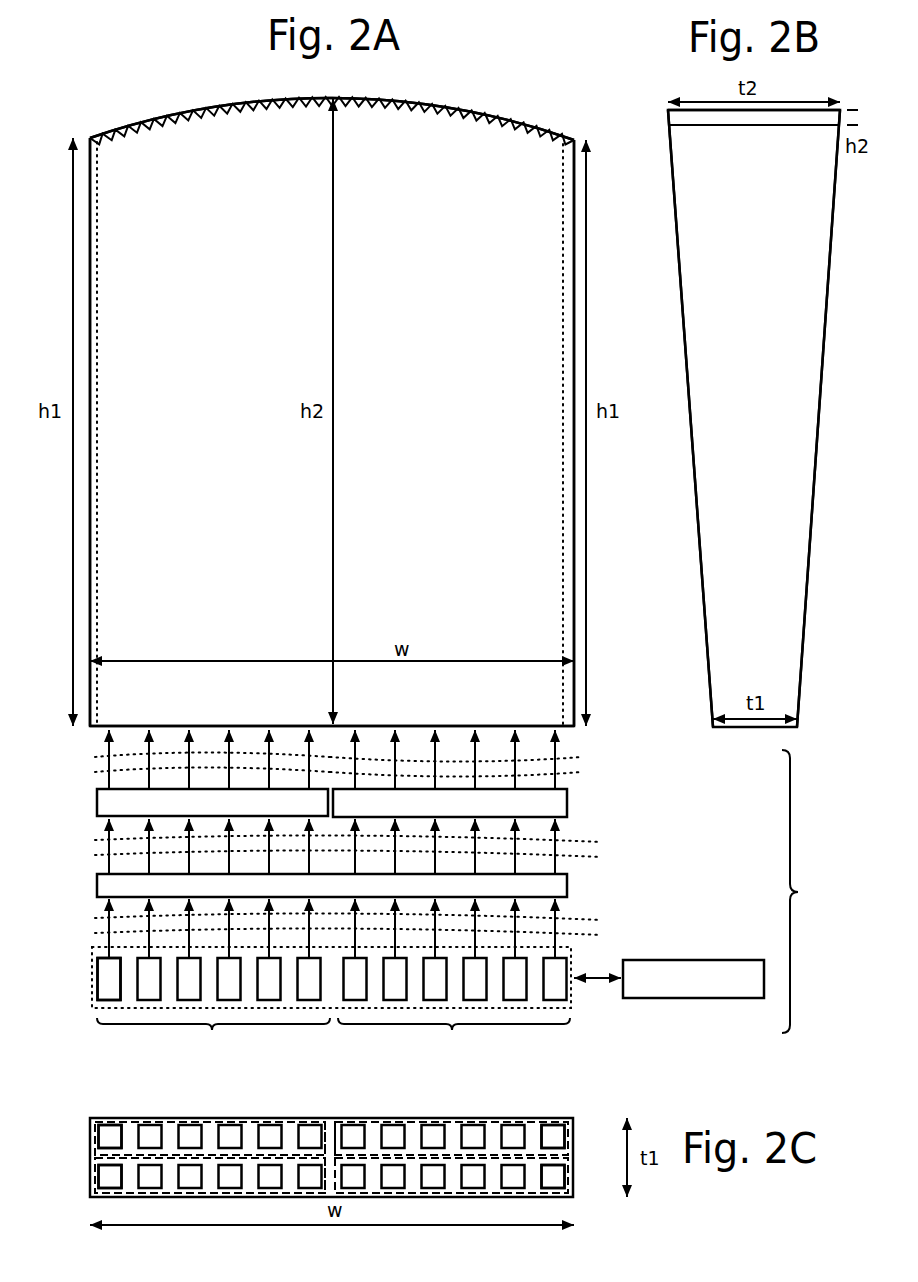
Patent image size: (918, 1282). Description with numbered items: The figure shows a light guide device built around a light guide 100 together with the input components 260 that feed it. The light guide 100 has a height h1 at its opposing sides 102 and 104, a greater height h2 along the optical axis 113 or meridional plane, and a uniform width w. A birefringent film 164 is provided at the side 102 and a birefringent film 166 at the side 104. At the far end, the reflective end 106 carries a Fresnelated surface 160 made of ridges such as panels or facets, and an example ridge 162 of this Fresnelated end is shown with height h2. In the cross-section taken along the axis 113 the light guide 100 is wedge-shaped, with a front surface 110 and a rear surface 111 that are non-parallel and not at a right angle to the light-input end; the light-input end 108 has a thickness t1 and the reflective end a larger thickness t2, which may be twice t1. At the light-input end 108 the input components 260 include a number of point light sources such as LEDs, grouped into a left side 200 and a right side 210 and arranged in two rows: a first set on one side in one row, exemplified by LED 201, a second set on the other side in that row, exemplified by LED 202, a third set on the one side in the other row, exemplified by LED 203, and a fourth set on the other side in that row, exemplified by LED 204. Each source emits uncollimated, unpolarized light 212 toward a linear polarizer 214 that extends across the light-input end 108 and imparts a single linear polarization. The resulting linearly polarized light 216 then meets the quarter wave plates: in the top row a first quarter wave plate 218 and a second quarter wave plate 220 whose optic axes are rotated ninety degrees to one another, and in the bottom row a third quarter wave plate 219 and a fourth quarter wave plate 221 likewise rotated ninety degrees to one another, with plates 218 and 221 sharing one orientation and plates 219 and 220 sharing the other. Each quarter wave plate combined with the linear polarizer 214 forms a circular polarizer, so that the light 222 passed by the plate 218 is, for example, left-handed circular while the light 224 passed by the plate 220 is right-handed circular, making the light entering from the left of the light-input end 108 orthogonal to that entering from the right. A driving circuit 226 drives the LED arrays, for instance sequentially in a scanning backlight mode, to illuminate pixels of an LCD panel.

In FIG. 2A, the light guide 100 is at (76, 114).
In FIG. 2B, the light guide 100 is at (768, 534).
In FIG. 2A, the side 102 is at (97, 294).
In FIG. 2A, the side 104 is at (562, 294).
In FIG. 2A, the reflective end 106 is at (366, 97).
In FIG. 2A, the light-input end 108 is at (450, 722).
In FIG. 2C, the light-input end 108 is at (568, 1118).
In FIG. 2B, the front surface 110 is at (681, 266).
In FIG. 2B, the rear surface 111 is at (831, 236).
In FIG. 2A, the optical axis 113 is at (334, 236).
In FIG. 2A, the Fresnelated surface 160 is at (276, 124).
In FIG. 2B, the ridge 162 is at (766, 128).
In FIG. 2A, the birefringent film 164 is at (100, 188).
In FIG. 2A, the birefringent film 166 is at (562, 182).
In FIG. 2A, the left side 200 is at (213, 1011).
In FIG. 2A, the LED 201 is at (98, 984).
In FIG. 2C, the LED 201 is at (98, 1136).
In FIG. 2C, the LED 202 is at (562, 1136).
In FIG. 2C, the LED 203 is at (98, 1176).
In FIG. 2C, the LED 204 is at (562, 1176).
In FIG. 2A, the right side 210 is at (454, 1011).
In FIG. 2A, the unpolarized light 212 is at (609, 937).
In FIG. 2A, the linear polarizer 214 is at (332, 885).
In FIG. 2C, the linear polarizer 214 is at (332, 1122).
In FIG. 2A, the linearly polarized light 216 is at (609, 855).
In FIG. 2A, the first quarter wave plate 218 is at (212, 802).
In FIG. 2C, the first quarter wave plate 218 is at (197, 1122).
In FIG. 2C, the third quarter wave plate 219 is at (208, 1197).
In FIG. 2A, the second quarter wave plate 220 is at (450, 803).
In FIG. 2C, the second quarter wave plate 220 is at (447, 1122).
In FIG. 2C, the fourth quarter wave plate 221 is at (443, 1197).
In FIG. 2A, the light 222 is at (86, 768).
In FIG. 2A, the light 224 is at (584, 770).
In FIG. 2A, the driving circuit 226 is at (669, 979).
In FIG. 2A, the input components 260 is at (813, 891).